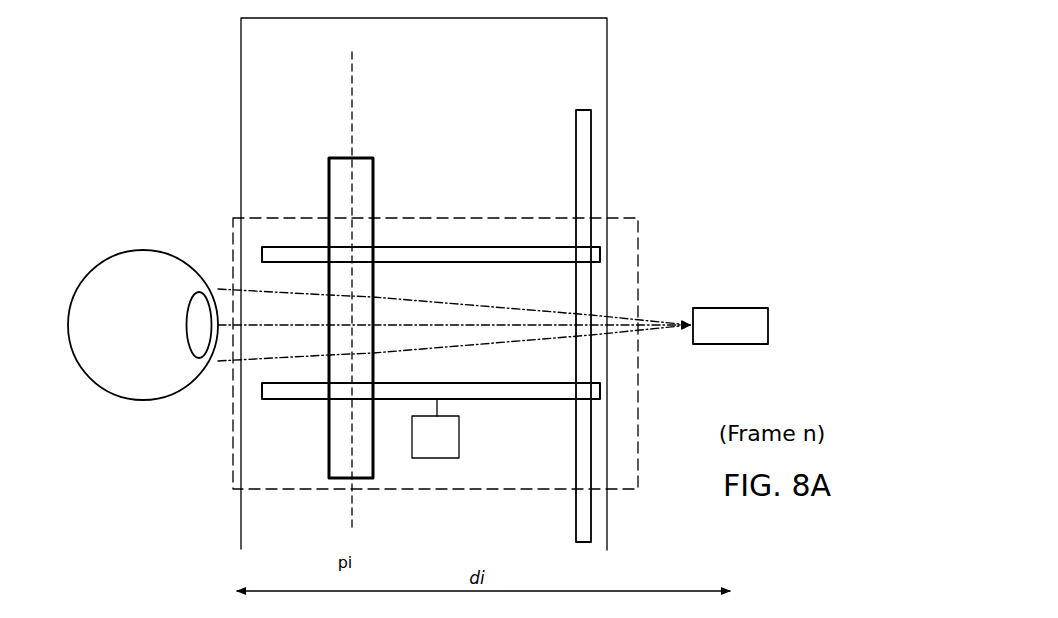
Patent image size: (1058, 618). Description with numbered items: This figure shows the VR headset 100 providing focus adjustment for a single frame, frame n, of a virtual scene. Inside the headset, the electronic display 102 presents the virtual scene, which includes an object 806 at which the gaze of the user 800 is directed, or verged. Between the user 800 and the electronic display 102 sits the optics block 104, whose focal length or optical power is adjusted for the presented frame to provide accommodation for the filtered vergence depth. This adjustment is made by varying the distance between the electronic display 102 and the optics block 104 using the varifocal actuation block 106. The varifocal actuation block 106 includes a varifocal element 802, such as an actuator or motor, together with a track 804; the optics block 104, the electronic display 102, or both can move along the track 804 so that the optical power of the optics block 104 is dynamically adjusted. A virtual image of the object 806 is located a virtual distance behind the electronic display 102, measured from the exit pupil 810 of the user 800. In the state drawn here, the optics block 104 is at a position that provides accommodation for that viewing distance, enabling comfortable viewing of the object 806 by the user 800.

The VR headset 100 is at (607, 48).
The electronic display 102 is at (592, 137).
The optics block 104 is at (348, 173).
The varifocal actuation block 106 is at (232, 243).
The user 800 is at (75, 288).
The varifocal element 802 is at (437, 440).
The track 804 is at (553, 394).
The object 806 is at (728, 308).
The exit pupil 810 is at (227, 383).